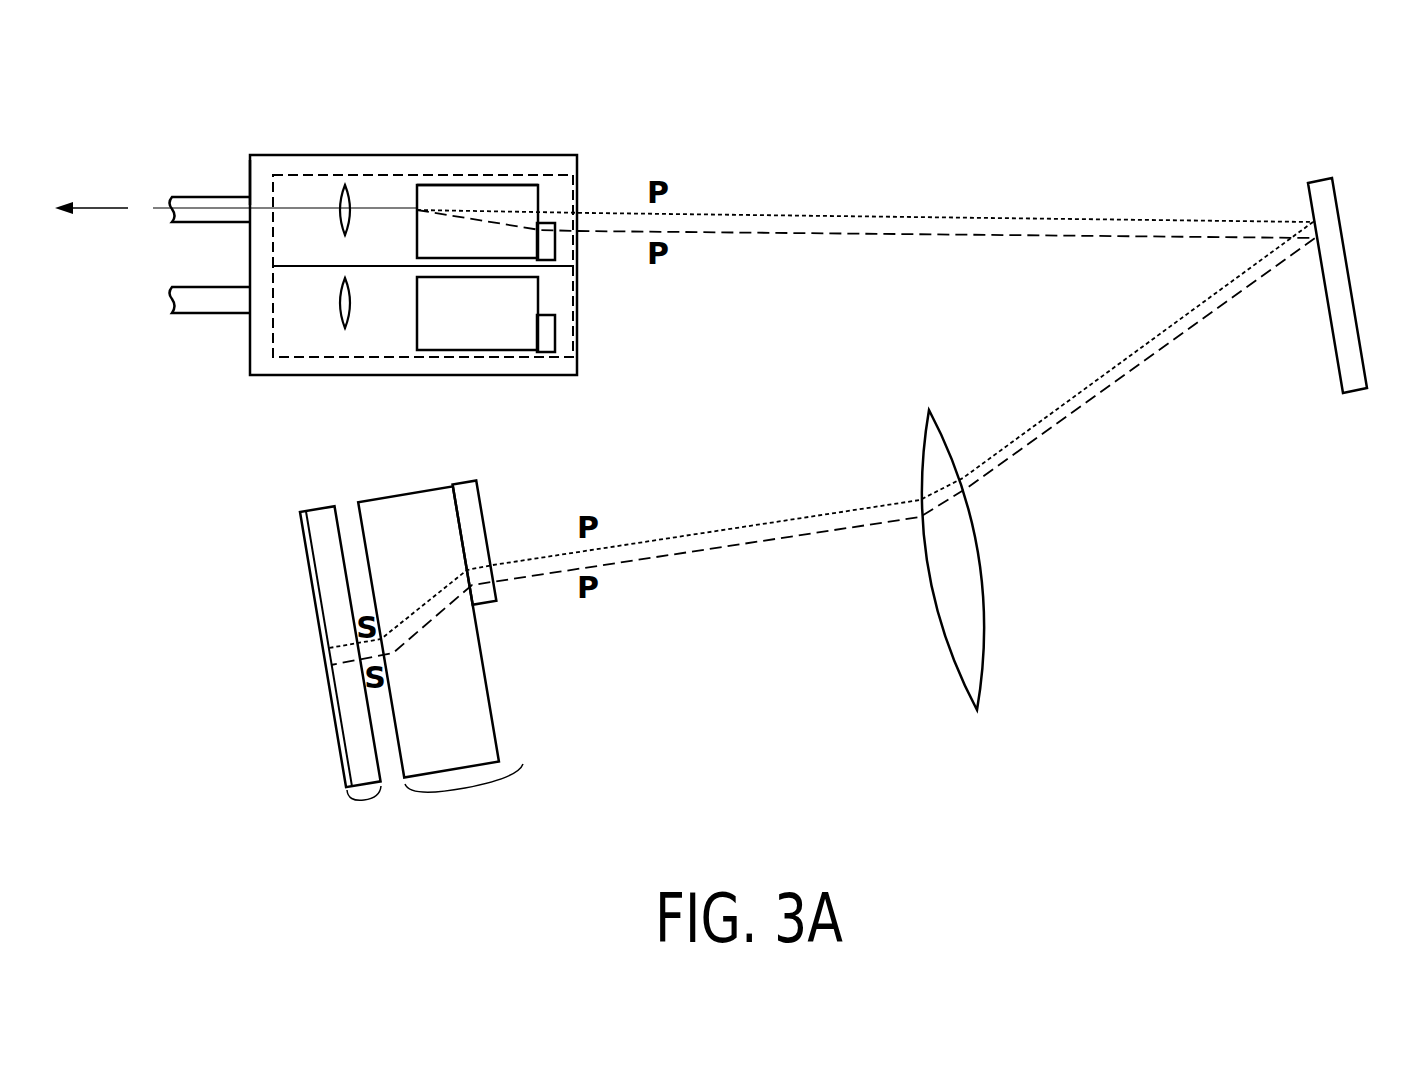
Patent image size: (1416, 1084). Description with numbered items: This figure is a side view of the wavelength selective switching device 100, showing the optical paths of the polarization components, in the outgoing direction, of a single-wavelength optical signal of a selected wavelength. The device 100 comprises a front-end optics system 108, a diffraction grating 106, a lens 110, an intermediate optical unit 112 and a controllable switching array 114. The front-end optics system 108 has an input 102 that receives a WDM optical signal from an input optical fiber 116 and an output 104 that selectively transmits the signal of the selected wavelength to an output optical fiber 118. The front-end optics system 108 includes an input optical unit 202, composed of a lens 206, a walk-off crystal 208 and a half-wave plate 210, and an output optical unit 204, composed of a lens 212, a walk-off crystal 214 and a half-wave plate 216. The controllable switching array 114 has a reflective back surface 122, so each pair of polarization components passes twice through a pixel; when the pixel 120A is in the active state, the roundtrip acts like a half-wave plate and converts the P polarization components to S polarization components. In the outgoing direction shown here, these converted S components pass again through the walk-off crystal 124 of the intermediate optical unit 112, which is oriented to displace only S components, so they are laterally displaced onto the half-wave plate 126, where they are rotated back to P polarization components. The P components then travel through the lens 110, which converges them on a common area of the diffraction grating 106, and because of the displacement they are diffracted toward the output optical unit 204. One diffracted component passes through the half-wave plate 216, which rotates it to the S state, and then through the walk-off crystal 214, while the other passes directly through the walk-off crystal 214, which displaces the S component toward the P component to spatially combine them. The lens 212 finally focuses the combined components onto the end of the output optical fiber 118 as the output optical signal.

The wavelength selective switching device 100 is at (1203, 77).
The input 102 is at (250, 308).
The output 104 is at (250, 202).
The diffraction grating 106 is at (1320, 178).
The front-end optics system 108 is at (382, 160).
The lens 110 is at (985, 665).
The intermediate optical unit 112 is at (464, 795).
The controllable switching array 114 is at (369, 813).
The input optical fiber 116 is at (198, 313).
The output optical fiber 118 is at (198, 197).
The pixel 120A is at (348, 722).
The back surface 122 is at (302, 508).
The walk-off crystal 124 is at (402, 498).
The half-wave plate 126 is at (468, 486).
The input optical unit 202 is at (400, 358).
The output optical unit 204 is at (442, 176).
The lens 206 is at (343, 322).
The walk-off crystal 208 is at (472, 350).
The half-wave plate 210 is at (546, 353).
The lens 212 is at (337, 198).
The walk-off crystal 214 is at (517, 186).
The half-wave plate 216 is at (555, 248).